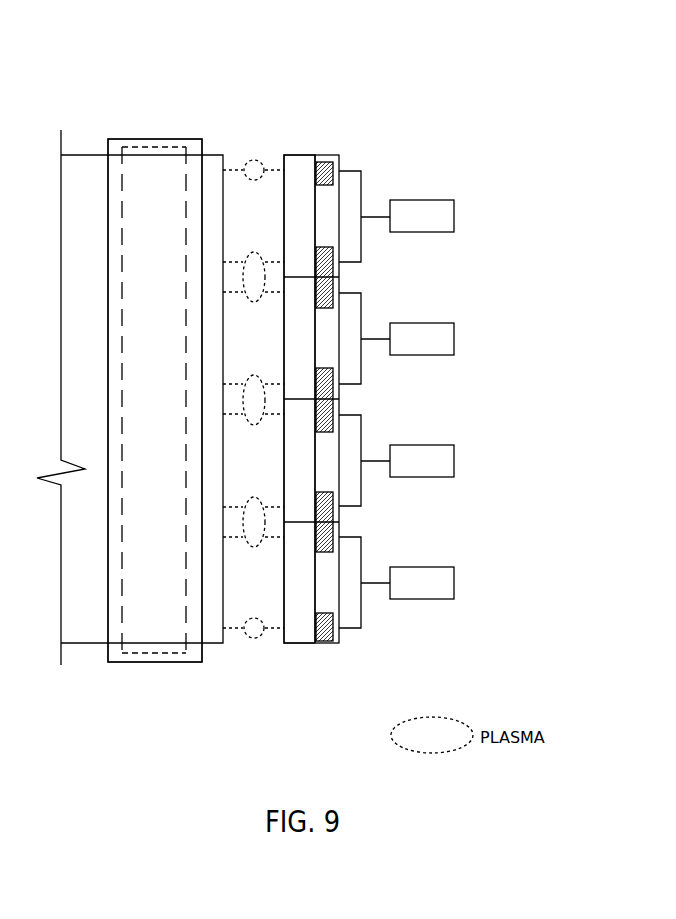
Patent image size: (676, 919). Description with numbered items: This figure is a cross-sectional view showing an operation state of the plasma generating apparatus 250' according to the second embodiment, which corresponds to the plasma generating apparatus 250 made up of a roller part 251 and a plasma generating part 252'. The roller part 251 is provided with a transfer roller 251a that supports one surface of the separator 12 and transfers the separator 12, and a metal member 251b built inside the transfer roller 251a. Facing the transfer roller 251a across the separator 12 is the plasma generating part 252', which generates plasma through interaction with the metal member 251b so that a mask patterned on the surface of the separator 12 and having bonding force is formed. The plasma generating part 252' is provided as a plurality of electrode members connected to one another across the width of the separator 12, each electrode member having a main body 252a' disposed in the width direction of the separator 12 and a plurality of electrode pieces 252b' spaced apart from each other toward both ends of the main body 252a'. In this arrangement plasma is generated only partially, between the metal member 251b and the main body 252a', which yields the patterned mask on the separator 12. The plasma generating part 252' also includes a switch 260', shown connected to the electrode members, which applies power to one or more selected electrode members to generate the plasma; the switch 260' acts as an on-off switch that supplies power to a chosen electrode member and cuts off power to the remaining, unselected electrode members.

The separator 12 is at (83, 644).
The plasma generating apparatus 250 is at (246, 19).
The plasma generating apparatus 250' is at (294, 383).
The roller part 251 is at (215, 78).
The transfer roller 251a is at (160, 139).
The metal member 251b is at (178, 147).
The plasma generating part 252' is at (321, 343).
The main body 252a' is at (297, 363).
The electrode pieces 252b' is at (345, 362).
The switch 260' is at (446, 399).